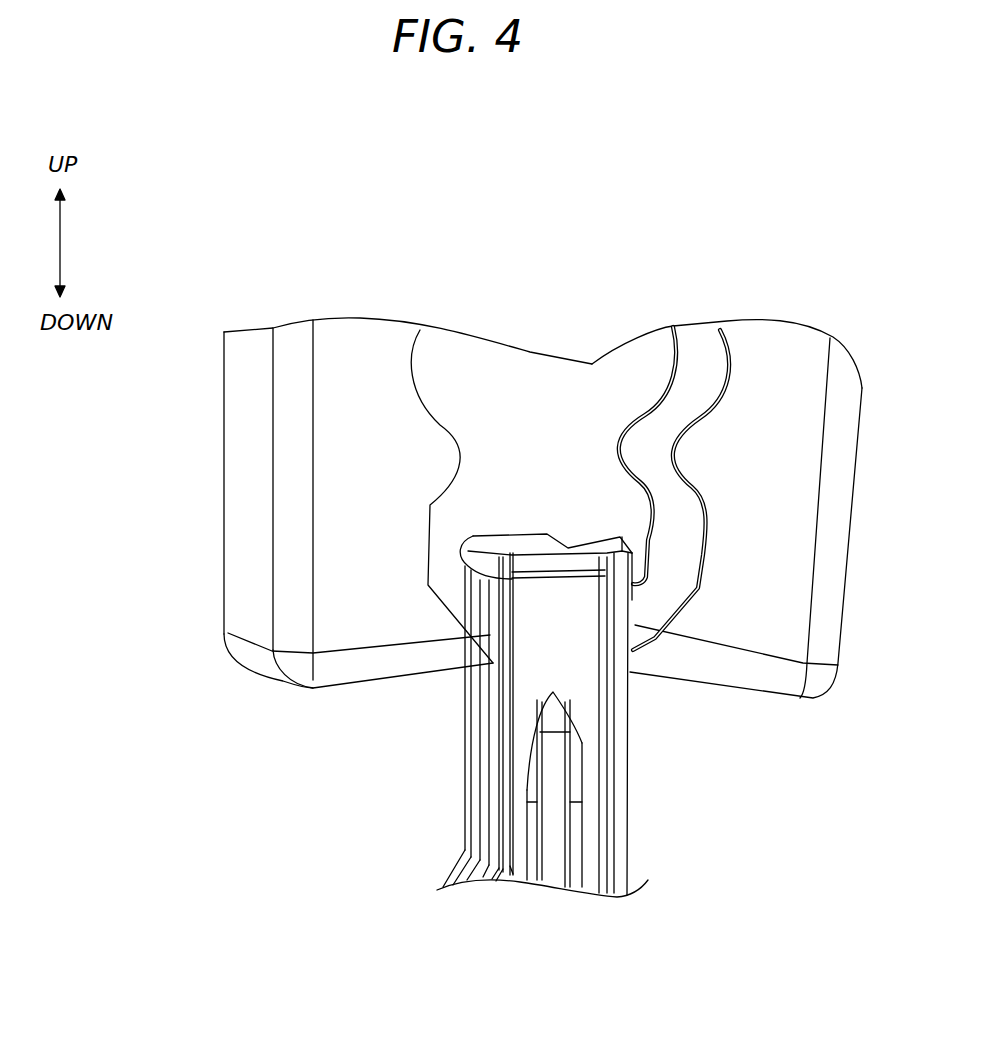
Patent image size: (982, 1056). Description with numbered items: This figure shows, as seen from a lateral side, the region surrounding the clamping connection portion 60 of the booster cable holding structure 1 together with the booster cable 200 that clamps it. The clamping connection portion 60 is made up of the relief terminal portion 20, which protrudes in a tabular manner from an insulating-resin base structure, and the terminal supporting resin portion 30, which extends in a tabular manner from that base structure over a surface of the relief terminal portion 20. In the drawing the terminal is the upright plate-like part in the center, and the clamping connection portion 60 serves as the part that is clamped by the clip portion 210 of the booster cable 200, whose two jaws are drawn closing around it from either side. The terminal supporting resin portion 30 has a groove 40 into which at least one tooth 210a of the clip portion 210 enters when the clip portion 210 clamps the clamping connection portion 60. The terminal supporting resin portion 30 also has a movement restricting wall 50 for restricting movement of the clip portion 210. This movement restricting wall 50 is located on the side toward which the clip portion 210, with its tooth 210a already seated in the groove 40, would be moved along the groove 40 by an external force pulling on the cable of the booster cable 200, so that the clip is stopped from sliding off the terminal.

The booster cable holding structure 1 is at (530, 503).
The relief terminal portion 20 is at (627, 803).
The terminal supporting resin portion 30 is at (445, 744).
The groove 40 is at (460, 800).
The movement restricting wall 50 is at (460, 538).
The clamping connection portion 60 is at (585, 512).
The booster cable 200 is at (287, 356).
The clip portion 210 is at (262, 476).
The tooth 210a is at (505, 640).